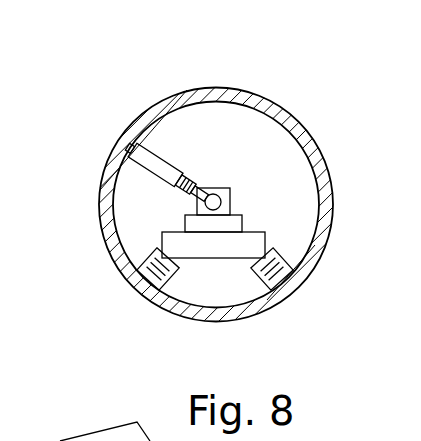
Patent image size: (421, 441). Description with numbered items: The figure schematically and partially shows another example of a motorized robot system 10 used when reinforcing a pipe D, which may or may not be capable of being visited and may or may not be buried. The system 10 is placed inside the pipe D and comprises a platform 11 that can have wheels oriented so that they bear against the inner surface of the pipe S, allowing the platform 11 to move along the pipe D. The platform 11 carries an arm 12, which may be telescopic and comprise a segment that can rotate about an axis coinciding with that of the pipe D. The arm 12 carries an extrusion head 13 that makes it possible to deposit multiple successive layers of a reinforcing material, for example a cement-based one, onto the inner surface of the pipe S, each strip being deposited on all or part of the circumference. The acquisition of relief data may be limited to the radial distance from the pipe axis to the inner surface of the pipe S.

The motorized system 10 is at (262, 204).
The platform 11 is at (215, 245).
The arm 12 is at (155, 172).
The extrusion head 13 is at (132, 143).
The pipe D is at (105, 168).
The inner surface of the pipe S is at (118, 205).